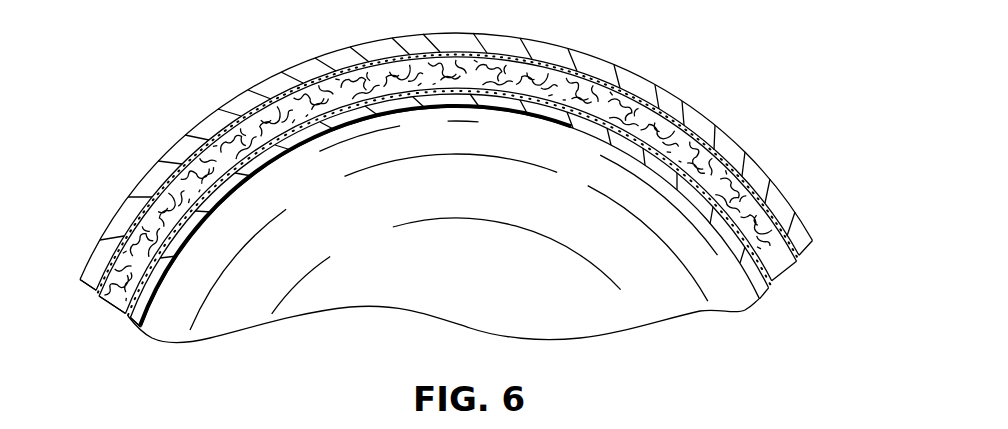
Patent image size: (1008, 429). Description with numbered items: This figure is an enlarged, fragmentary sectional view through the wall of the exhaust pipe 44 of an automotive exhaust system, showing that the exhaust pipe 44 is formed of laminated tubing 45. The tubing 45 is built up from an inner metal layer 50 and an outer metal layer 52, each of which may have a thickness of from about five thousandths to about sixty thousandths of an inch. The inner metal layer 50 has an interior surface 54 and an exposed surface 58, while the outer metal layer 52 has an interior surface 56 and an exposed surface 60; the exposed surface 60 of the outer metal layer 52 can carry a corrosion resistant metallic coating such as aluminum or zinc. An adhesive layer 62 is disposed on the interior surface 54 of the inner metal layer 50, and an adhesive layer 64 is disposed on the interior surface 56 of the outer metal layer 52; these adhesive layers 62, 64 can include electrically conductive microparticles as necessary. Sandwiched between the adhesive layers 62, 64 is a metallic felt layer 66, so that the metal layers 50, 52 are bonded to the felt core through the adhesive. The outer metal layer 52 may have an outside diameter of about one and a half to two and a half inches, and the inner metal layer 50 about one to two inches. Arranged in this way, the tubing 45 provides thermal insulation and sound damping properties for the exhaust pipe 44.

The exhaust pipe 44 is at (759, 112).
The tubing 45 is at (655, 87).
The inner metal layer 50 is at (593, 128).
The outer metal layer 52 is at (506, 25).
The interior surface 54 is at (495, 98).
The interior surface 56 is at (343, 67).
The exposed surface 58 is at (260, 167).
The exposed surface 60 is at (250, 90).
The adhesive layer 62 is at (128, 313).
The adhesive layer 64 is at (100, 293).
The metallic felt layer 66 is at (118, 312).